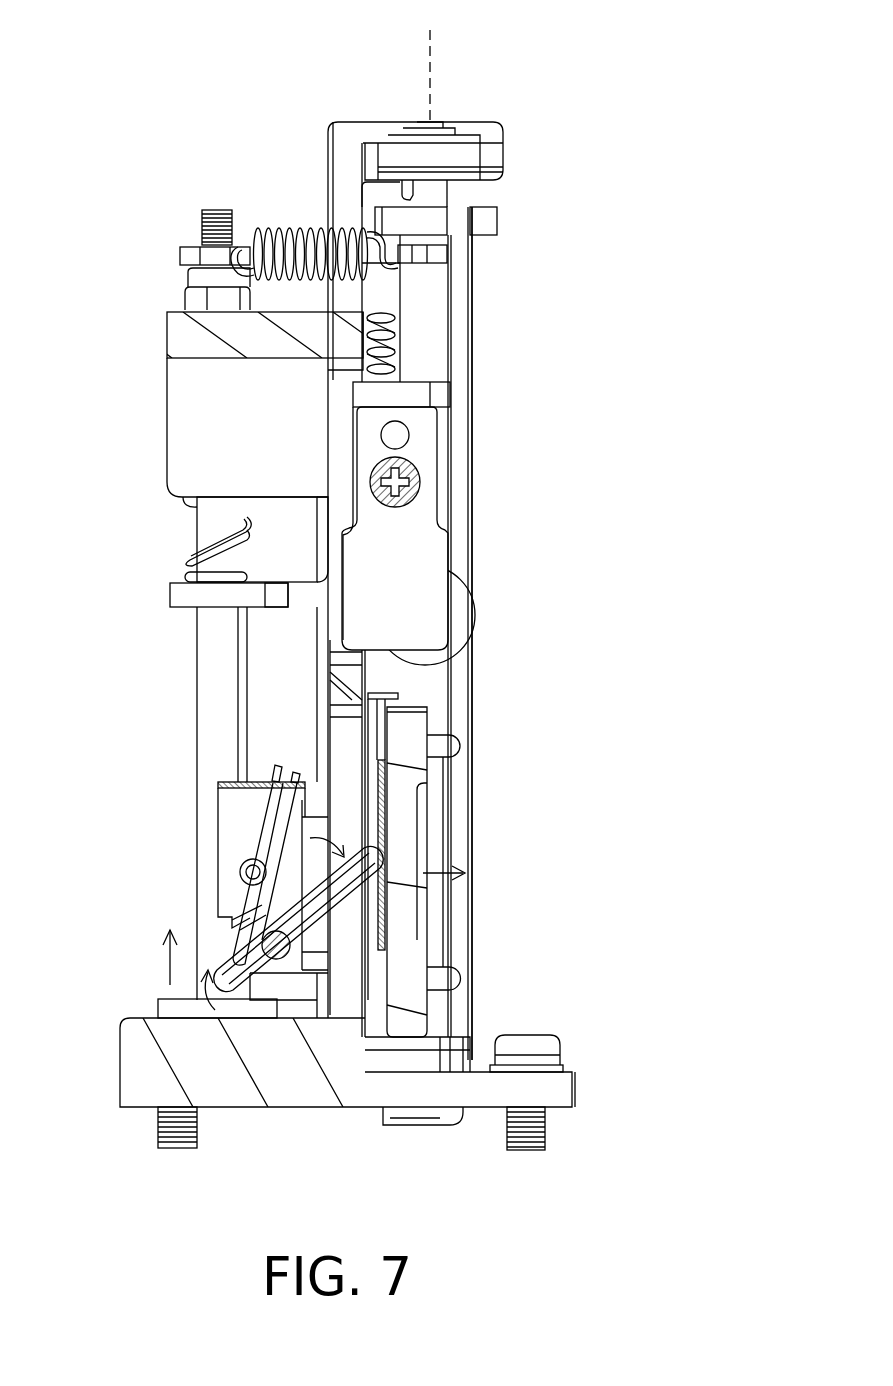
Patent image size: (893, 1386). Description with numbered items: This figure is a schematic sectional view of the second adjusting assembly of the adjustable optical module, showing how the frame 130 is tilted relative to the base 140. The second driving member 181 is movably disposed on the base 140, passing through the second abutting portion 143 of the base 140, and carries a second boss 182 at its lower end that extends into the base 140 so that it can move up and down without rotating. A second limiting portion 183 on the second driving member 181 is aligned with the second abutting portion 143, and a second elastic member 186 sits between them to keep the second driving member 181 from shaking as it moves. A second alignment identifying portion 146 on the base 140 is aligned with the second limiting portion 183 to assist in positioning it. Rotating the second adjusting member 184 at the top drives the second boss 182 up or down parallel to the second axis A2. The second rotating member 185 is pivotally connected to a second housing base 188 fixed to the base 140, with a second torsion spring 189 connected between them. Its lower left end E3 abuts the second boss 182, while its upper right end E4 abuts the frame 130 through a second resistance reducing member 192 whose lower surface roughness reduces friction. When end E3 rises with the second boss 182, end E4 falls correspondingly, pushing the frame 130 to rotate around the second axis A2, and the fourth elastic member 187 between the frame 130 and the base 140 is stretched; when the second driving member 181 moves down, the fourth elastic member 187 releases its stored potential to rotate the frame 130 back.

The second axis A2 is at (449, 63).
The frame 130 is at (407, 1015).
The base 140 is at (130, 1075).
The second abutting portion 143 is at (190, 418).
The second alignment identifying portion 146 is at (277, 592).
The second driving member 181 is at (215, 687).
The second boss 182 is at (163, 1010).
The second limiting portion 183 is at (183, 594).
The second adjusting member 184 is at (195, 297).
The second rotating member 185 is at (253, 982).
The second elastic member 186 is at (186, 552).
The fourth elastic member 187 is at (290, 226).
The second housing base 188 is at (228, 782).
The second torsion spring 189 is at (267, 852).
The second resistance reducing member 192 is at (362, 965).
The end of the second rotating member E3 is at (243, 1003).
The other end of the second rotating member E4 is at (375, 870).